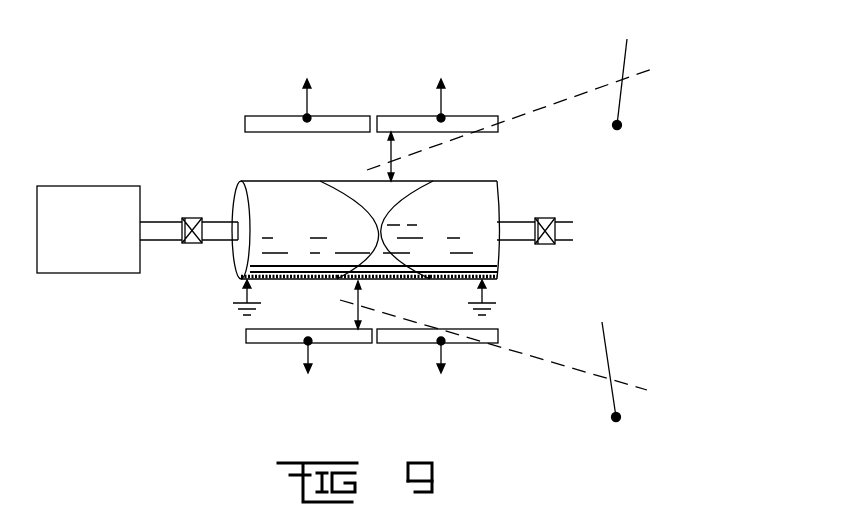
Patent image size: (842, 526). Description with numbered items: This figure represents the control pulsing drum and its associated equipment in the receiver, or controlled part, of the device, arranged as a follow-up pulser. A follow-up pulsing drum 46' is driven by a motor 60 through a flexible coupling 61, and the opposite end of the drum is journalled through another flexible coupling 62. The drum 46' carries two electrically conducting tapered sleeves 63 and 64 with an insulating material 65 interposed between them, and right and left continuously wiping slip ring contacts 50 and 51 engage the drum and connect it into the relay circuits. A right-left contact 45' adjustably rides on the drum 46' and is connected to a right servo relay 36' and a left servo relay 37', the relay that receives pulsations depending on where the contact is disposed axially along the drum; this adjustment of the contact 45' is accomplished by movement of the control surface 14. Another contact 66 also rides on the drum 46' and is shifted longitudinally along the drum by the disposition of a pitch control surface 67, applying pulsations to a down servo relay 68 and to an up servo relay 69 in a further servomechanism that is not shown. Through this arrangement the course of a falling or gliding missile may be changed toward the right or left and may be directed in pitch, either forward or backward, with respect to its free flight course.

The control surface 14 is at (622, 61).
The right servo relay 36' is at (301, 84).
The left servo relay 37' is at (444, 84).
The right-left contact 45' is at (409, 156).
The follow-up pulsing drum 46' is at (226, 235).
The right slip ring contact 50 is at (484, 299).
The left slip ring contact 51 is at (245, 298).
The motor 60 is at (88, 274).
The flexible coupling 61 is at (190, 244).
The flexible coupling 62 is at (546, 245).
The electrically conducting tapered sleeve 63 is at (290, 281).
The electrically conducting tapered sleeve 64 is at (450, 281).
The insulating material 65 is at (381, 281).
The contact 66 is at (357, 317).
The pitch control surface 67 is at (610, 352).
The down servo relay 68 is at (310, 358).
The up servo relay 69 is at (443, 358).